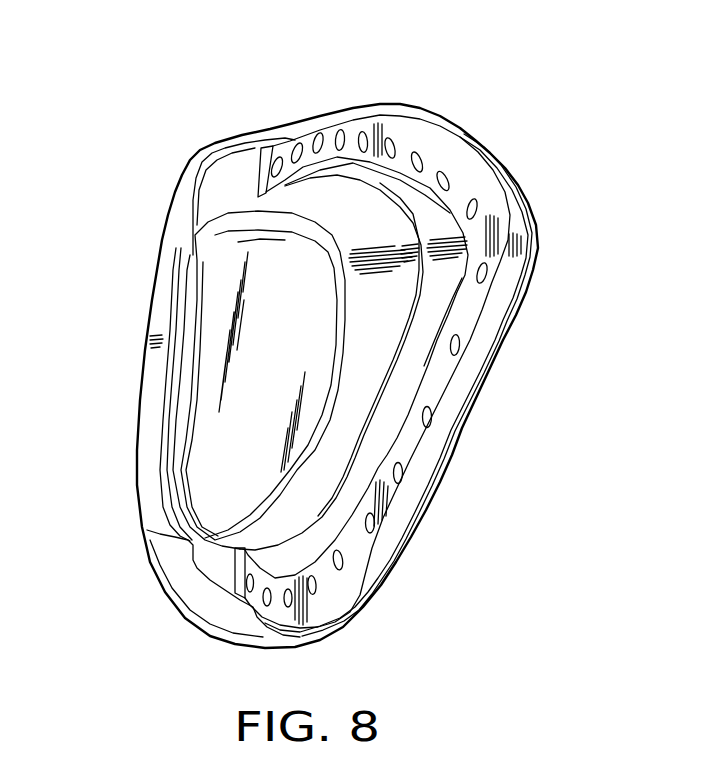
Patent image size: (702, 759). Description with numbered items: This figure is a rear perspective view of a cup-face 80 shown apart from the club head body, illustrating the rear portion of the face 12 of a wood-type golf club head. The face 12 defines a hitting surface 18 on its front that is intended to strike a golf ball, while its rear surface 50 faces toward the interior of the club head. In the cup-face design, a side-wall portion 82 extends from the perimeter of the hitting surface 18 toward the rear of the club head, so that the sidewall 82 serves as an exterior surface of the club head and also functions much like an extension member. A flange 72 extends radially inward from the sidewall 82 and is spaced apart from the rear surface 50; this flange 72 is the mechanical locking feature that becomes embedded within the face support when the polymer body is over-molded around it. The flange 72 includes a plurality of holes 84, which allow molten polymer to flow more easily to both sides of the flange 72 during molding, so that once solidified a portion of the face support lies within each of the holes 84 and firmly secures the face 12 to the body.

The face portion 12 is at (120, 112).
The hitting surface 18 is at (152, 273).
The rear surface 50 is at (205, 428).
The flange 72 is at (358, 549).
The cup-face 80 is at (177, 178).
The side-wall portion 82 is at (303, 116).
The holes 84 is at (458, 353).